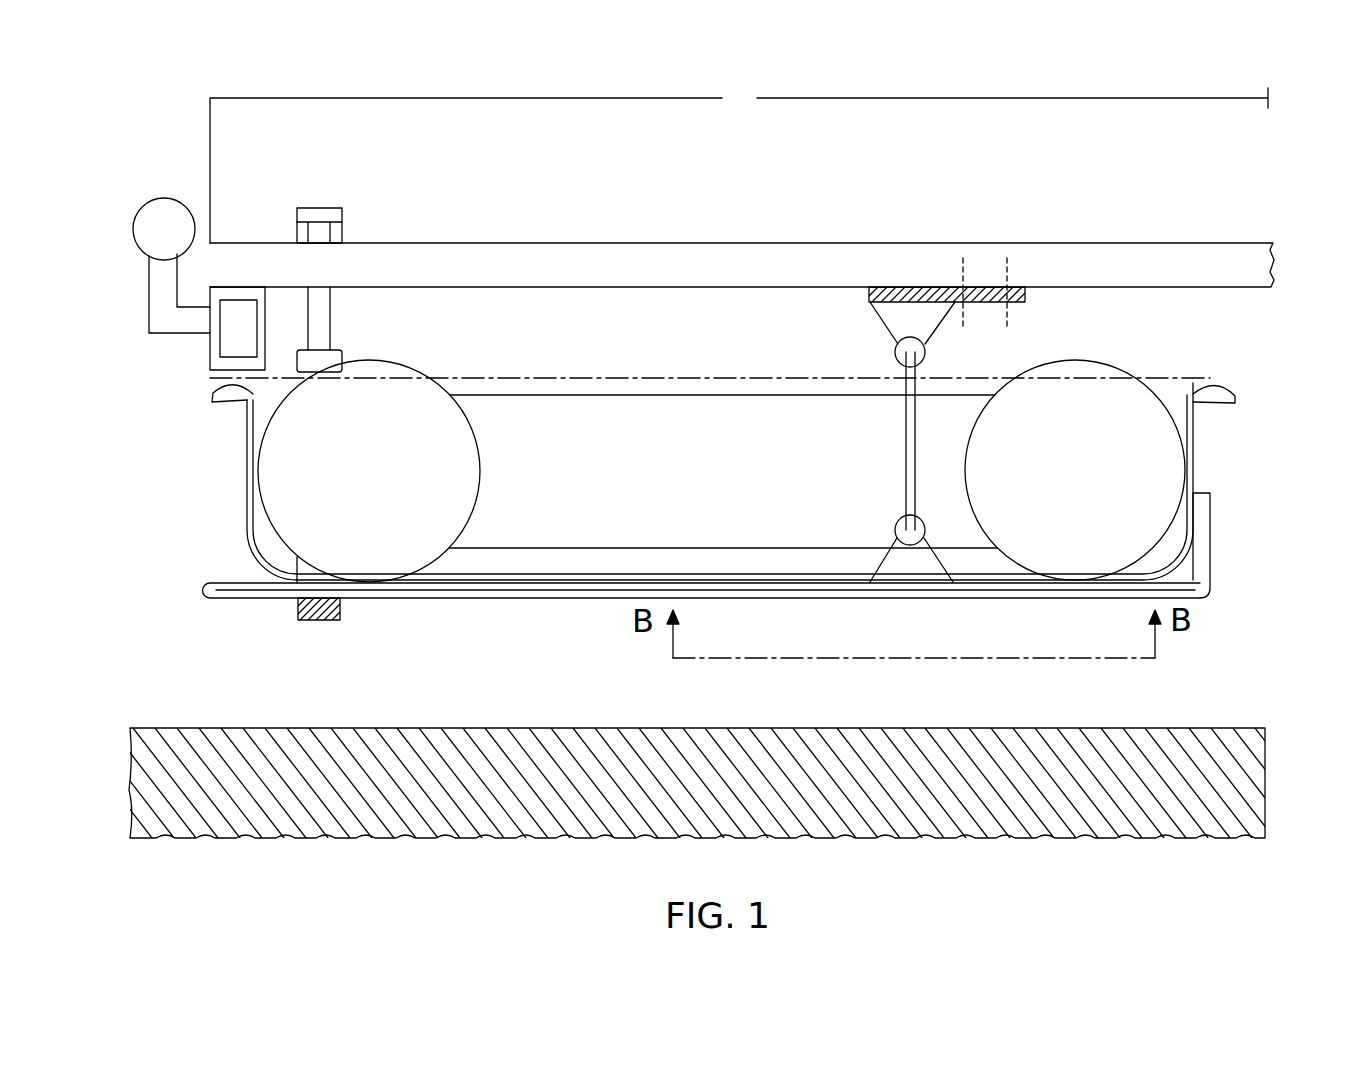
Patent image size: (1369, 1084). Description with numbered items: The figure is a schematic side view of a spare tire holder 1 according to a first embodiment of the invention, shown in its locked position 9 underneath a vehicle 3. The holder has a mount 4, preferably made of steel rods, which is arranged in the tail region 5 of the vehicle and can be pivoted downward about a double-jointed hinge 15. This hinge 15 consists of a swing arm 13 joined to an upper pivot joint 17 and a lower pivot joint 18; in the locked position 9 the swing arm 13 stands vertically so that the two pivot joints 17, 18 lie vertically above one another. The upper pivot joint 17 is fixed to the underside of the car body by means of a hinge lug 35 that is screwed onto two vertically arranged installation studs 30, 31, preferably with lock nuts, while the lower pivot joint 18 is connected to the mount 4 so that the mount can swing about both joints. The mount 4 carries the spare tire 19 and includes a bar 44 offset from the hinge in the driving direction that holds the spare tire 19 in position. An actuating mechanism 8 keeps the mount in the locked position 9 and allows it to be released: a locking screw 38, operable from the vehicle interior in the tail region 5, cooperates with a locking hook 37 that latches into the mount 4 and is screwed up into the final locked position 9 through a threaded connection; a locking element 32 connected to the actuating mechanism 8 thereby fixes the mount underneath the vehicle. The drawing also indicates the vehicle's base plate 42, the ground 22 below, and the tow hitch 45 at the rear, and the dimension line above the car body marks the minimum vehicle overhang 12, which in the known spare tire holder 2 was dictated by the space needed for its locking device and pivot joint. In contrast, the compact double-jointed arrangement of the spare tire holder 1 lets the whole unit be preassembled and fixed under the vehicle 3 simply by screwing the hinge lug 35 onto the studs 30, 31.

The spare tire holder 1 is at (1262, 405).
The spare tire holder 2 is at (742, 242).
The vehicle 3 is at (1114, 225).
The mount 4 is at (544, 605).
The tail region 5 is at (144, 224).
The actuating mechanism 8 is at (346, 298).
The locked position 9 is at (222, 484).
The minimum vehicle overhang 12 is at (739, 163).
The swing arm 13 is at (905, 455).
The double-jointed hinge 15 is at (890, 442).
The upper pivot joint 17 is at (897, 353).
The pivot joint 18 is at (896, 528).
The spare tire 19 is at (712, 406).
The ground 22 is at (1187, 726).
The installation stud 30 is at (960, 273).
The installation stud 31 is at (1010, 273).
The locking element 32 is at (287, 610).
The hinge lug 35 is at (1022, 297).
The locking hook 37 is at (320, 622).
The locking screw 38 is at (318, 207).
The base plate 42 is at (197, 590).
The bar 44 is at (1212, 546).
The tow hitch 45 is at (148, 232).